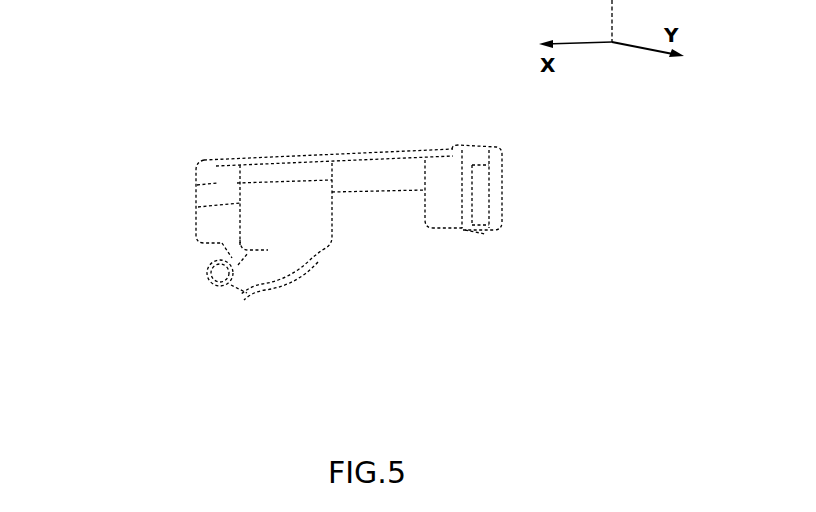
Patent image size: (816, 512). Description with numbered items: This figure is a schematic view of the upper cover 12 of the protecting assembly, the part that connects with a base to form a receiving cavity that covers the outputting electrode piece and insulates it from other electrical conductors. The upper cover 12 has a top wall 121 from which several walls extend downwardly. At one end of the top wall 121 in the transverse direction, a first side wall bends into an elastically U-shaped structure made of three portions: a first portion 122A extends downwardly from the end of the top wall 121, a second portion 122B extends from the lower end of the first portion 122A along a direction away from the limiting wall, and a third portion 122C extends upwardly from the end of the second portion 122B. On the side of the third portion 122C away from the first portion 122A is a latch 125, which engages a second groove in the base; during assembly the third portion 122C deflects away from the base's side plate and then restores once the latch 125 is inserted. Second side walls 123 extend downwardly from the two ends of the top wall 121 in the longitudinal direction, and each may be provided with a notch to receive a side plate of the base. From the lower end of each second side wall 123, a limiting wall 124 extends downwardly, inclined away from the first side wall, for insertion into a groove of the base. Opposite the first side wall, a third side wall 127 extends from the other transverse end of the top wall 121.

The upper cover 12 is at (156, 70).
The top wall 121 is at (340, 157).
The first portion 122A is at (465, 208).
The second portion 122B is at (483, 232).
The third portion 122C is at (498, 178).
The second side wall 123 is at (188, 218).
The limiting wall 124 is at (240, 292).
The latch 125 is at (502, 218).
The third side wall 127 is at (200, 190).